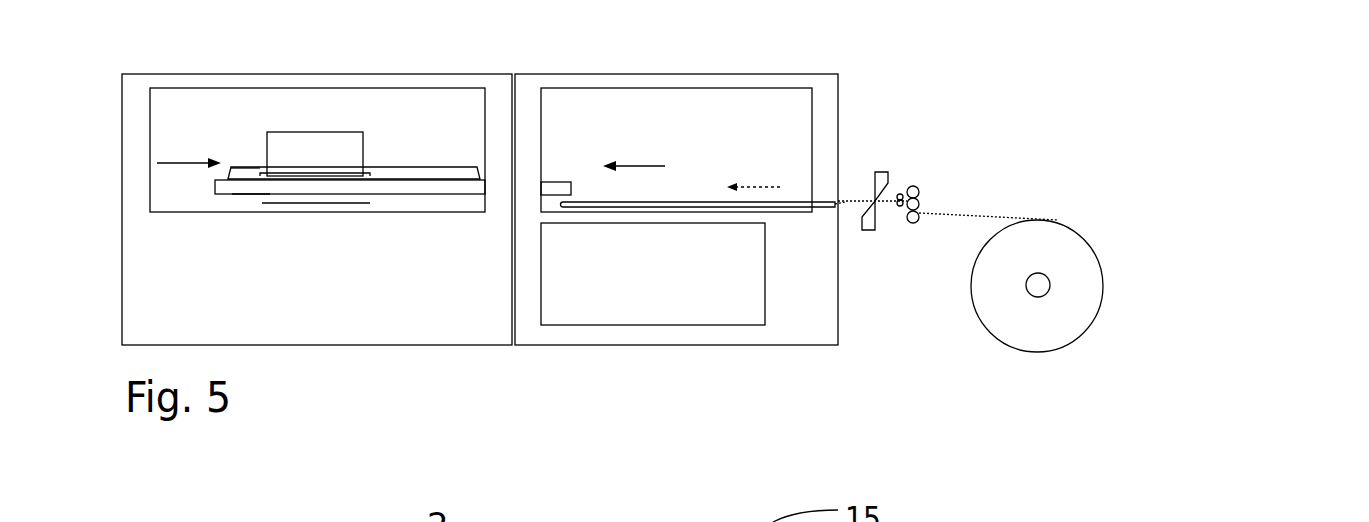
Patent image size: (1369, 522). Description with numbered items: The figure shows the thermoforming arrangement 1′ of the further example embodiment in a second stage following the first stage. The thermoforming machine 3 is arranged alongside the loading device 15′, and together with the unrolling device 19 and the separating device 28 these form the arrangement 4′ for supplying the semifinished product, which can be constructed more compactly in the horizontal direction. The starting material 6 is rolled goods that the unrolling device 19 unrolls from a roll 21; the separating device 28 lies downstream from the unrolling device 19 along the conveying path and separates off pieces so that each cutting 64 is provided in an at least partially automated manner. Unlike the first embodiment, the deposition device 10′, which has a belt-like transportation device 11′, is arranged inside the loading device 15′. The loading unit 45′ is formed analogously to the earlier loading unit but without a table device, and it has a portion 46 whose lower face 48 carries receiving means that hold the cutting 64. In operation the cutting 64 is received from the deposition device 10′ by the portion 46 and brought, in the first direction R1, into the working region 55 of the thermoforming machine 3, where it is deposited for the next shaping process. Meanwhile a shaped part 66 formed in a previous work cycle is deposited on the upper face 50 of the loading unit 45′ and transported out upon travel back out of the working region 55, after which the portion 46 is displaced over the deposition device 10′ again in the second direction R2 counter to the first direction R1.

The thermoforming machine 3 is at (320, 68).
The loading device 15′ is at (855, 73).
The working region 55 is at (430, 133).
The second direction R2 is at (188, 163).
The portion 46 is at (388, 167).
The upper face 50 is at (250, 162).
The shaped part 66 is at (332, 165).
The loading unit 45′ is at (430, 187).
The lower face 48 is at (249, 208).
The cutting 64 is at (300, 203).
The belt-like transportation device 11′ is at (737, 209).
The first direction R1 is at (633, 166).
The deposition device 10′ is at (691, 226).
The separating device 28 is at (881, 155).
The starting material 6 is at (952, 217).
The unrolling device 19 is at (1061, 210).
The roll 21 is at (1090, 278).
The arrangement 4′ is at (1040, 402).
The thermoforming arrangement 1′ is at (1268, 113).